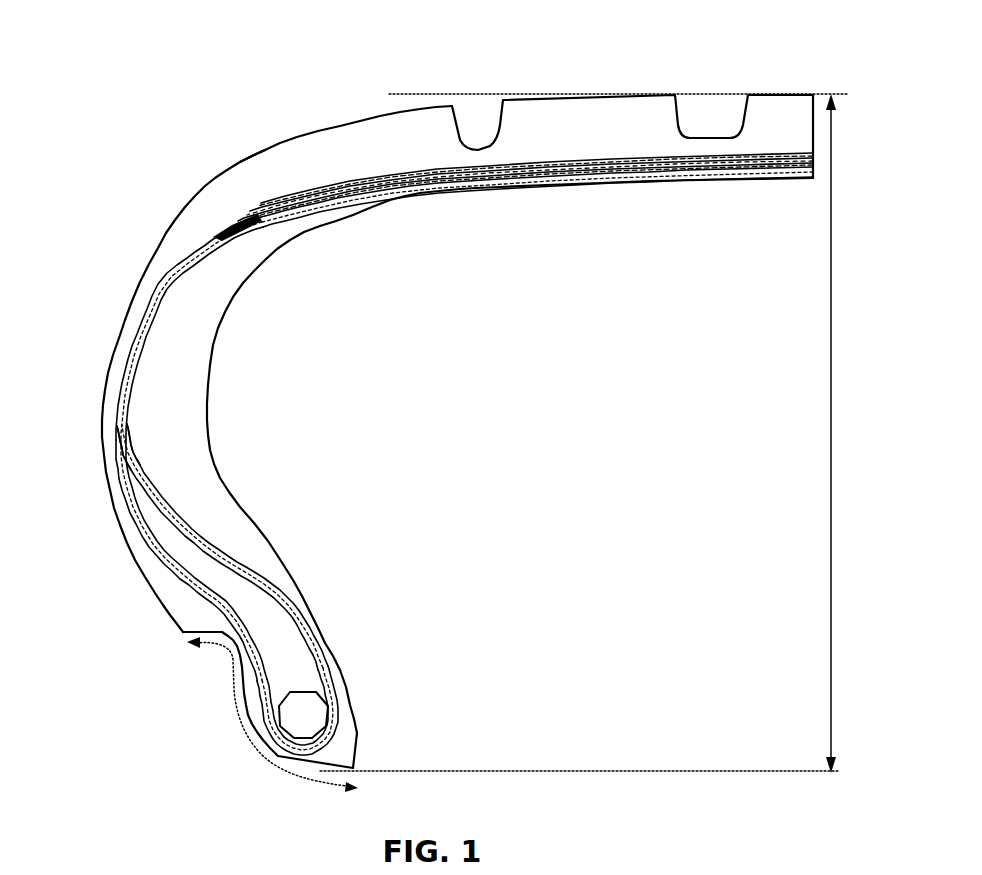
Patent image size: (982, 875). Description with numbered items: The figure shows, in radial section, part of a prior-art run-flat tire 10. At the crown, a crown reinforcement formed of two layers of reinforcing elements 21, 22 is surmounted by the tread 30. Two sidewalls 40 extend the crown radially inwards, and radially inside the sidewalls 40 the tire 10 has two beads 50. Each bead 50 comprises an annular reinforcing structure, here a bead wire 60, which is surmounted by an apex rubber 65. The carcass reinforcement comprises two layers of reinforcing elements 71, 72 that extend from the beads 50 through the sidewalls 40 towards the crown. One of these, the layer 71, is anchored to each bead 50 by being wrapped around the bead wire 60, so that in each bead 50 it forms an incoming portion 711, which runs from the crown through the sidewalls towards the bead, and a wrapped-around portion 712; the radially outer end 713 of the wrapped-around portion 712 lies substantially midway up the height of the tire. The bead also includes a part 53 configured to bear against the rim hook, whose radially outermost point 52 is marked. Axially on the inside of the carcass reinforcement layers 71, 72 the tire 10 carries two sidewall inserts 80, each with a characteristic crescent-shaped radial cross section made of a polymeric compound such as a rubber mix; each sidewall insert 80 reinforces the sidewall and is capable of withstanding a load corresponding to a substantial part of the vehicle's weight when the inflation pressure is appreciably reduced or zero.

The run-flat tire 10 is at (208, 112).
The layer of reinforcing elements 21 is at (322, 183).
The layer of reinforcing elements 22 is at (237, 220).
The tread 30 is at (575, 122).
The sidewall 40 is at (115, 358).
The bead 50 is at (347, 725).
The radially outermost point 52 is at (174, 632).
The part of the bead configured to bear against the rim hook 53 is at (233, 686).
The bead wire 60 is at (293, 720).
The apex rubber 65 is at (296, 659).
The layer of reinforcing elements of the carcass reinforcement 71 is at (290, 596).
The incoming portion 711 is at (330, 650).
The wrapped-around portion 712 is at (153, 543).
The radially outer end of the wrapped-around portion 713 is at (109, 432).
The layer of reinforcing elements of the carcass reinforcement 72 is at (118, 395).
The sidewall insert 80 is at (185, 384).